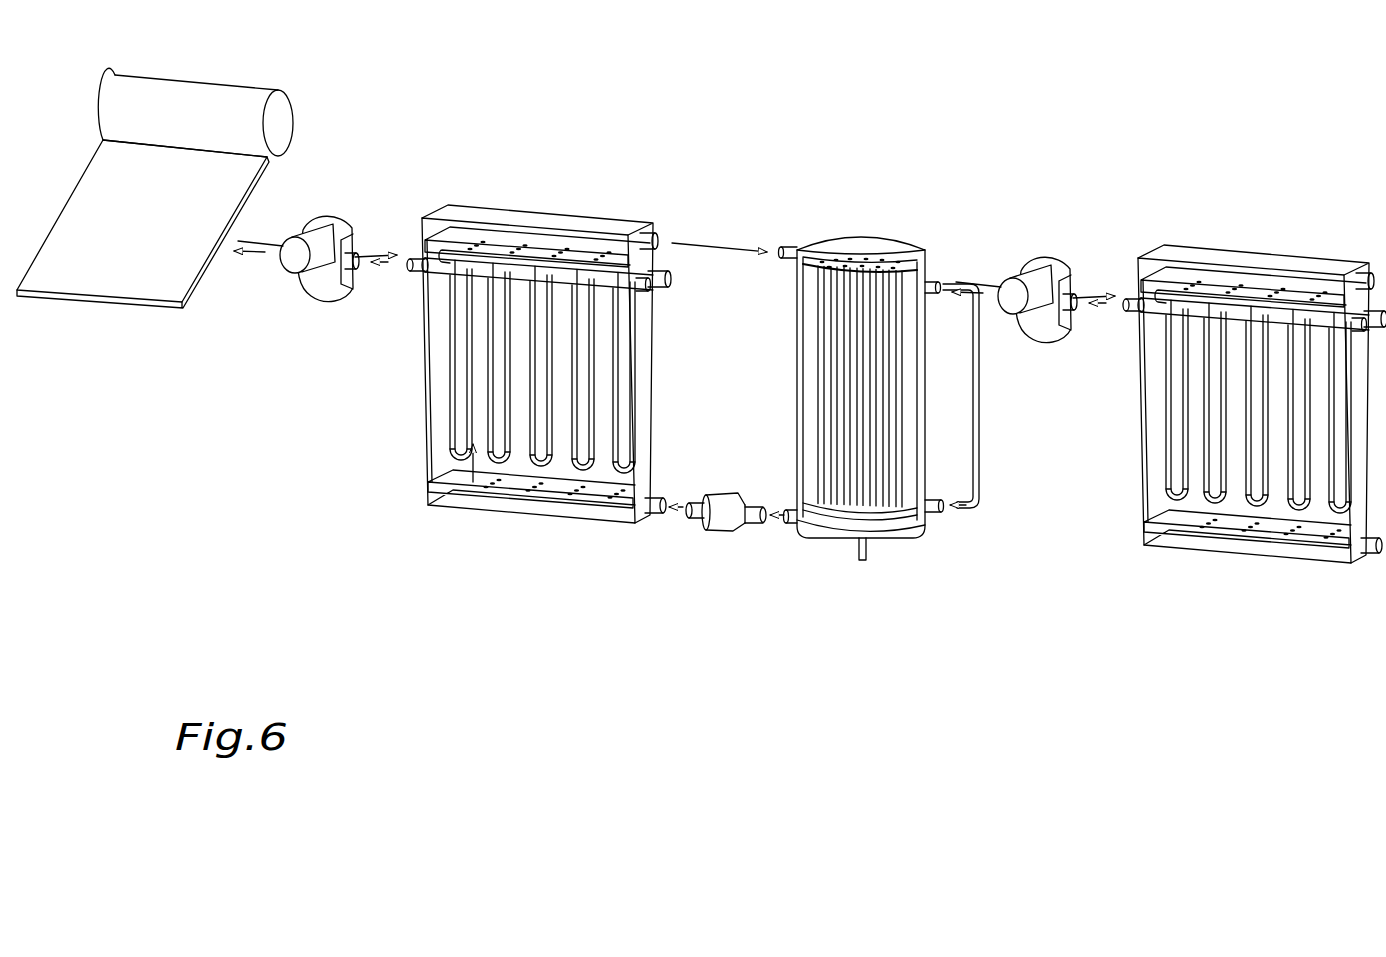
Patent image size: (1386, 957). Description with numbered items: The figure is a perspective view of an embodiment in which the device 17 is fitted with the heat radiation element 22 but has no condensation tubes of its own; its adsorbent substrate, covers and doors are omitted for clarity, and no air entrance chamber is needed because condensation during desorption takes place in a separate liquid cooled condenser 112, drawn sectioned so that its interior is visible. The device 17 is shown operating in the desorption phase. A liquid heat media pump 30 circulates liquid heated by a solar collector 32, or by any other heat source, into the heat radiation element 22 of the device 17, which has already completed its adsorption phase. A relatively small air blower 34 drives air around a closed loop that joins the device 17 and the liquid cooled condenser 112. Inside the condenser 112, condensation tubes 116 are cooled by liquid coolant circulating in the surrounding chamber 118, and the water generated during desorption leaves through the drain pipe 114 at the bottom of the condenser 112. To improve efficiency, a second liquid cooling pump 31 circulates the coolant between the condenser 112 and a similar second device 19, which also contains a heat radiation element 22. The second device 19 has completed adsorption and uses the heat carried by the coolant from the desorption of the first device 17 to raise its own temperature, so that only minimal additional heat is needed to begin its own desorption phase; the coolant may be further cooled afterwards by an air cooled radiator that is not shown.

The solar collector 32 is at (252, 93).
The liquid heat media pump 30 is at (342, 215).
The device 17 is at (573, 175).
The heat radiation element 22 is at (453, 347).
The liquid cooled condenser 112 is at (884, 240).
The chamber 118 is at (810, 397).
The condensation tubes 116 is at (827, 377).
The drain pipe 114 is at (860, 560).
The air blower 34 is at (717, 497).
The second liquid cooling pump 31 is at (1062, 258).
The second device 19 is at (1270, 215).